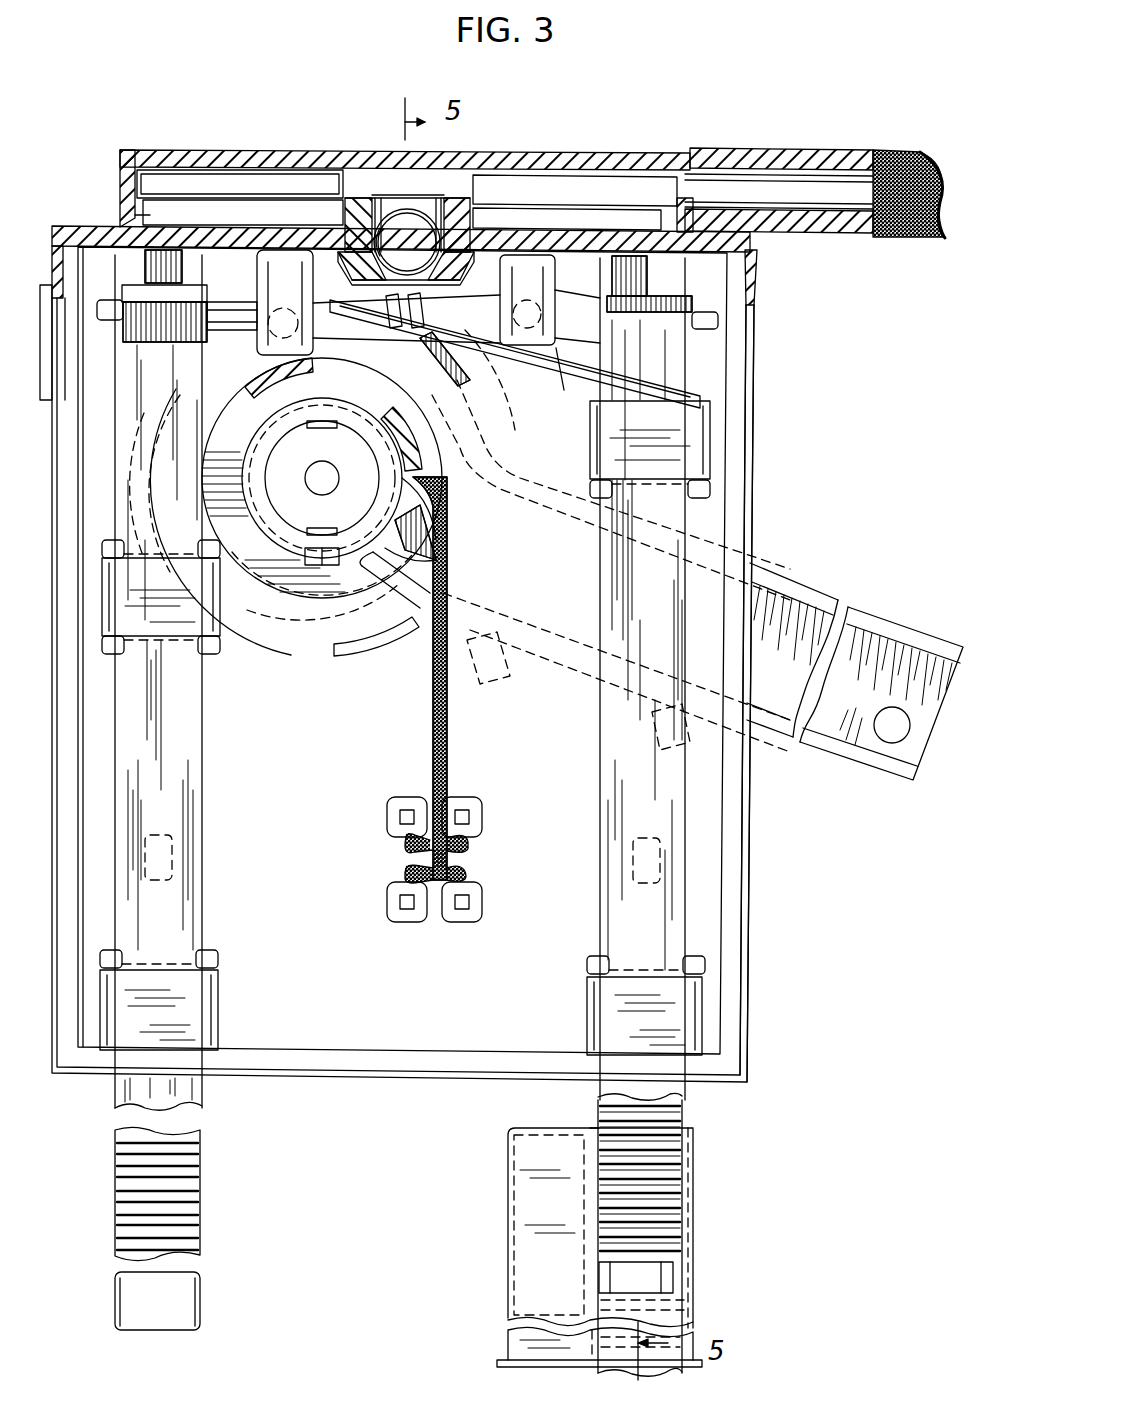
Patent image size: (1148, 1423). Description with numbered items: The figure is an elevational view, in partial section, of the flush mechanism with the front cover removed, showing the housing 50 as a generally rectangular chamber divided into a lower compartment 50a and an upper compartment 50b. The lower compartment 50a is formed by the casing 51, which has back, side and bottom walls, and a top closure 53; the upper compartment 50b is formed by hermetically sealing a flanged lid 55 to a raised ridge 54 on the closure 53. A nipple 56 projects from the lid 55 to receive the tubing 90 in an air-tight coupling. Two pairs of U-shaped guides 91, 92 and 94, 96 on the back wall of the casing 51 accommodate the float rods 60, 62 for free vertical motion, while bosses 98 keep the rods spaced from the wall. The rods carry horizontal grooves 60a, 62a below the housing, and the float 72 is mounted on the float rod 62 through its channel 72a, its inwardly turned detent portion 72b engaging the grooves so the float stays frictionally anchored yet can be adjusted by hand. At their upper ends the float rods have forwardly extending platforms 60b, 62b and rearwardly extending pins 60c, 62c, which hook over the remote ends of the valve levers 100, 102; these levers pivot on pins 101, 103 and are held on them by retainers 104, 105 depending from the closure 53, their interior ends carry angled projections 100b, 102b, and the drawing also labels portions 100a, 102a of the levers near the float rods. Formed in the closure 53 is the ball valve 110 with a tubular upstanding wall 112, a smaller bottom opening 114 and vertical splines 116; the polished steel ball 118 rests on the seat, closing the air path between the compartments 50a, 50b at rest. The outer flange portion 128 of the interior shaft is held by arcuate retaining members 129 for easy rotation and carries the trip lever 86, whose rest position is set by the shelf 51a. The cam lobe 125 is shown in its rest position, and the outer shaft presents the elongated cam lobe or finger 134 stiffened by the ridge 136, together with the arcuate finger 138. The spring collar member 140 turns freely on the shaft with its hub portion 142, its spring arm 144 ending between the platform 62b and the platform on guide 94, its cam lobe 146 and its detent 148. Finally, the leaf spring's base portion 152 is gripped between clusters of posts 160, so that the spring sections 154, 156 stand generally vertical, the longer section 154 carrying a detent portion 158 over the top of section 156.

The housing 50 is at (452, 661).
The lower compartment 50a is at (275, 878).
The upper compartment 50b is at (240, 182).
The casing 51 is at (744, 862).
The shelf 51a is at (565, 680).
The top closure 53 is at (760, 268).
The raised ridge 54 is at (150, 215).
The flanged lid 55 is at (503, 152).
The nipple 56 is at (738, 150).
The float rod 60 is at (203, 796).
The horizontal grooves 60a is at (200, 1168).
The forwardly extending platform 60b is at (205, 288).
The rearwardly extending pin 60c is at (140, 292).
The float rod 62 is at (642, 679).
The horizontal grooves 62a is at (665, 1142).
The forwardly extending platform 62b is at (695, 308).
The rearwardly extending pin 62c is at (620, 296).
The float 72 is at (695, 1210).
The channel 72a is at (598, 1128).
The detent portion 72b is at (662, 1278).
The trip lever 86 is at (808, 592).
The tubing 90 is at (905, 162).
The guide 91 is at (220, 620).
The guide 92 is at (218, 1012).
The rod guide 94 is at (590, 446).
The guide 96 is at (587, 1010).
The bosses 98 is at (108, 544).
The valve lever 100 is at (403, 299).
The lever bracket 100a is at (130, 320).
The angled projection 100b is at (451, 318).
The pin 101 is at (235, 343).
The valve lever 102 is at (470, 330).
The lever tab 102a is at (715, 328).
The angled projection 102b is at (450, 352).
The pin 103 is at (540, 392).
The retainer 104 is at (305, 234).
The retainer 105 is at (540, 238).
The ball valve 110 is at (384, 225).
The tubular upstanding wall 112 is at (474, 217).
The bottom opening 114 is at (407, 242).
The vertical splines 116 is at (478, 210).
The polished steel ball 118 is at (385, 196).
The cam lobe 125 is at (445, 548).
The outer flange portion 128 is at (270, 660).
The arcuate retaining members 129 is at (165, 412).
The finger 134 is at (437, 578).
The radially extending ridge 136 is at (385, 598).
The arcuate finger 138 is at (273, 533).
The spring collar member 140 is at (343, 497).
The hub portion 142 is at (420, 412).
The spring arm 144 is at (562, 398).
The cam lobe 146 is at (420, 440).
The detent 148 is at (334, 653).
The base portion 152 is at (466, 874).
The spring section 154 is at (448, 520).
The spring section 156 is at (448, 778).
The detent portion 158 is at (450, 494).
The posts 160 is at (387, 806).